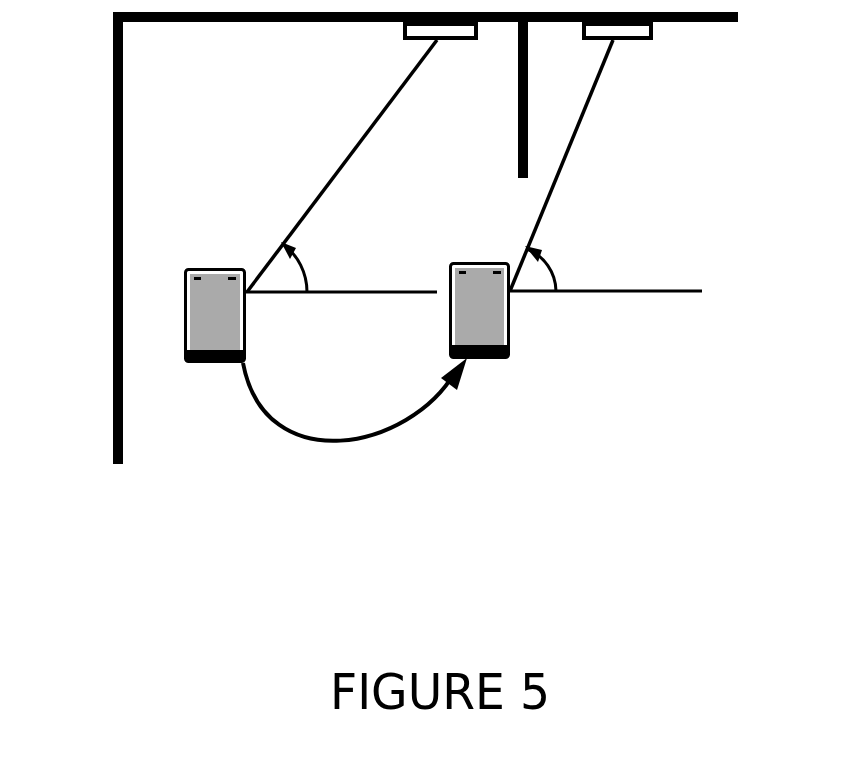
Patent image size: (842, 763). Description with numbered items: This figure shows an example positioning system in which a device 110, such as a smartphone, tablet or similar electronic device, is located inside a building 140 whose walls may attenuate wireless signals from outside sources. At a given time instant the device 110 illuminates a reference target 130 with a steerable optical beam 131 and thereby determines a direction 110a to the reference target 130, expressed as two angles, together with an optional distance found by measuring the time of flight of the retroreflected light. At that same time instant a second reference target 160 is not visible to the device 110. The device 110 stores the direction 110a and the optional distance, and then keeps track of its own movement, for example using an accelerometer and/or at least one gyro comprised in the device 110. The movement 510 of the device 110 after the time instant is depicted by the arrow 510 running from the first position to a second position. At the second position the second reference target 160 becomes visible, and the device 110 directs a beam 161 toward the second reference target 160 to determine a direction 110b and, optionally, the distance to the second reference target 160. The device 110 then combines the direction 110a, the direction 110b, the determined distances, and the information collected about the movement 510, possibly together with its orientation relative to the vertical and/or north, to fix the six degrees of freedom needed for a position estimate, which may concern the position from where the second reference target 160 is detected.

The device 110 is at (205, 364).
The direction 110a is at (357, 262).
The direction 110b is at (607, 260).
The reference target 130 is at (477, 41).
The steerable optical beam 131 is at (362, 142).
The building 140 is at (113, 403).
The second reference target 160 is at (653, 41).
The beam 161 is at (597, 90).
The movement 510 is at (362, 438).